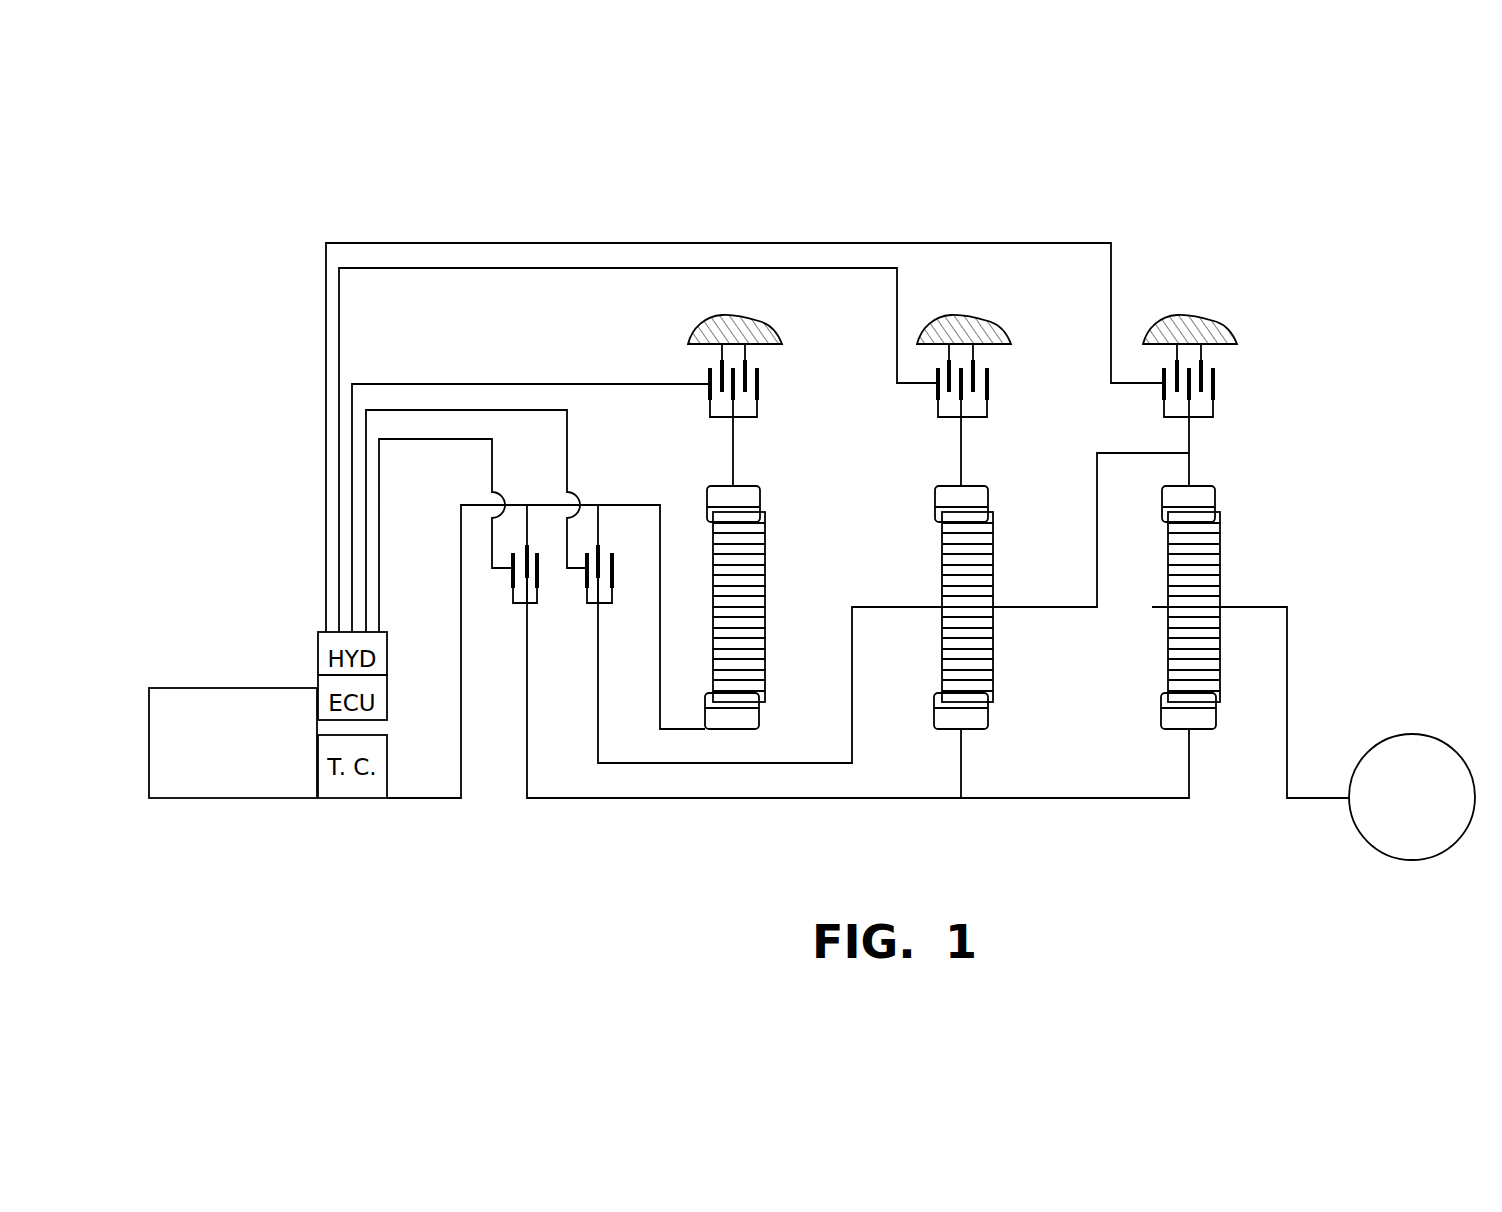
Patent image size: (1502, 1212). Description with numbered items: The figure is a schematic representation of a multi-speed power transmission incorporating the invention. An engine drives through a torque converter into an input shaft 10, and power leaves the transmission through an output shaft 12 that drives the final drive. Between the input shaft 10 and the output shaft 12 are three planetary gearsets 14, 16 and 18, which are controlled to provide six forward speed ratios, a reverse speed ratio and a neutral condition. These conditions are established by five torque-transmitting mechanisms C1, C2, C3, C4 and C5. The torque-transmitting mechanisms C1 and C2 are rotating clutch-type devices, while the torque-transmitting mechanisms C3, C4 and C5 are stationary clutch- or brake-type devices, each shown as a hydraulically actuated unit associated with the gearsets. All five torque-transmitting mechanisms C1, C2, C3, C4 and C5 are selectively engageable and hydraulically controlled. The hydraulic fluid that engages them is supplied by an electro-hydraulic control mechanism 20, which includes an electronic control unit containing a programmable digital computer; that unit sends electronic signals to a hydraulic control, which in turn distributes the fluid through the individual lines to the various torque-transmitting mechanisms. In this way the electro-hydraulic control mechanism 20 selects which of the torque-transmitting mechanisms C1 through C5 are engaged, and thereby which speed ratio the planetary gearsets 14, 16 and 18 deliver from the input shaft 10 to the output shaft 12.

The input shaft 10 is at (428, 798).
The output shaft 12 is at (1318, 798).
The planetary gearset 14 is at (1222, 478).
The planetary gearset 16 is at (995, 478).
The planetary gearset 18 is at (767, 478).
The electro-hydraulic control mechanism 20 is at (265, 659).
The torque-transmitting mechanism C1 is at (510, 596).
The torque-transmitting mechanism C2 is at (585, 596).
The torque-transmitting mechanism C3 is at (785, 348).
The torque-transmitting mechanism C4 is at (1012, 348).
The torque-transmitting mechanism C5 is at (1240, 348).